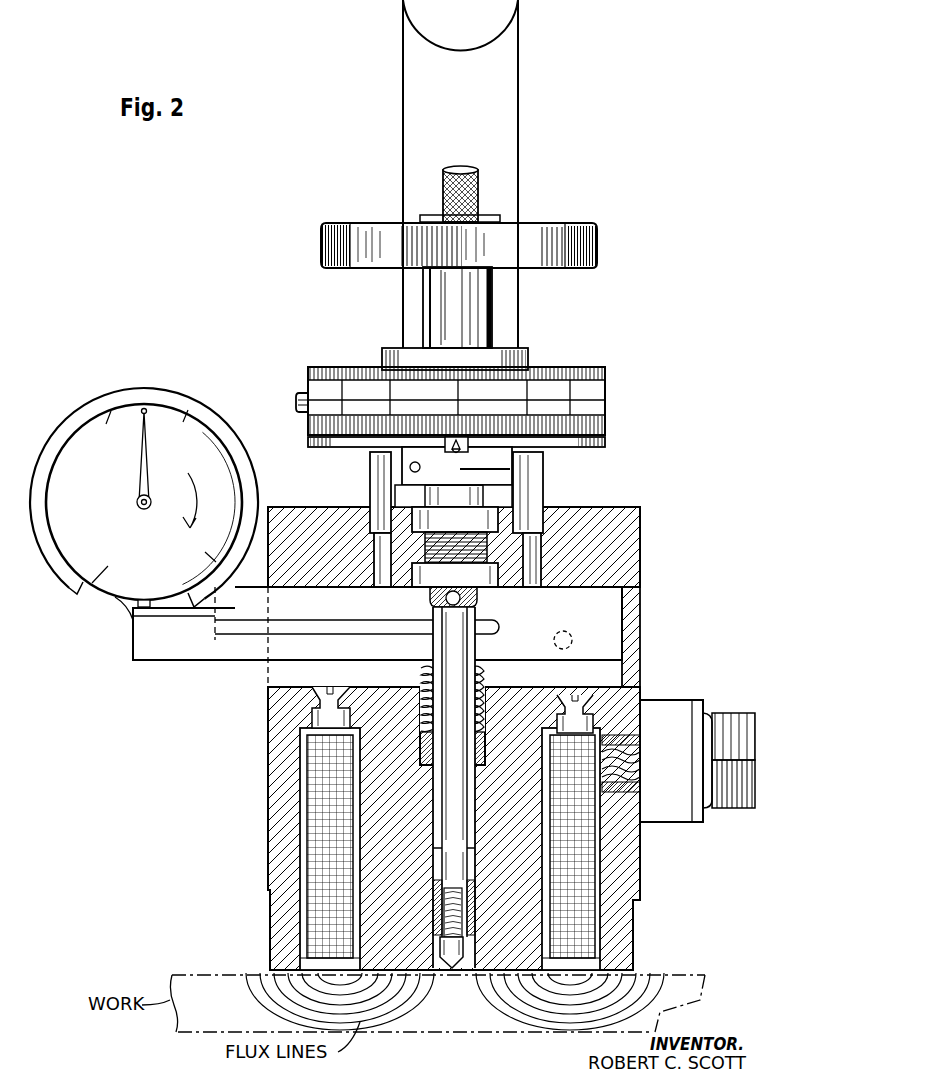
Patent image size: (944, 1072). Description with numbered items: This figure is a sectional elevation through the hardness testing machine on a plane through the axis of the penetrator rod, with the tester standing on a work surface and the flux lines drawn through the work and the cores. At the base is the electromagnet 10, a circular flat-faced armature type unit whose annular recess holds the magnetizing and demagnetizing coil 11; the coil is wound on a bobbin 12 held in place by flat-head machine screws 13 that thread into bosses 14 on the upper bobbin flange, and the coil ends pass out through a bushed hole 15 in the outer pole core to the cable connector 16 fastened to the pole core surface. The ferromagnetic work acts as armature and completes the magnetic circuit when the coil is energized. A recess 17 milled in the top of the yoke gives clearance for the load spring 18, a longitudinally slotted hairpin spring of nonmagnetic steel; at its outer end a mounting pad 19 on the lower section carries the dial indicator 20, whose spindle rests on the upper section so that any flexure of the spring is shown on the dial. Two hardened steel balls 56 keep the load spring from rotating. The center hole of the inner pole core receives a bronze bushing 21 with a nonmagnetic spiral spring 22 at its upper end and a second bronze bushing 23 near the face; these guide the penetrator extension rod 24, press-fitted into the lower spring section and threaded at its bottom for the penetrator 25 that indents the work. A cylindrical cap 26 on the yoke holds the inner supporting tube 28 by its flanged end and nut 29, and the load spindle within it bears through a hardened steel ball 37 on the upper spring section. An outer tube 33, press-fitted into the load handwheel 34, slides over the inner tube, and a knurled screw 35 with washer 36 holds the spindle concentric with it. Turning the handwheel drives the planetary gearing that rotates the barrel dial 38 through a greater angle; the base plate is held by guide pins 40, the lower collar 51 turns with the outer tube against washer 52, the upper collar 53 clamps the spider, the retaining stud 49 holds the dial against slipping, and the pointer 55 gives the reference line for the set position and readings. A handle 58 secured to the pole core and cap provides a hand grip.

The handle 58 is at (473, 25).
The knurled screw 35 is at (478, 178).
The washer 36 is at (485, 220).
The load handwheel 34 is at (600, 238).
The outer tube 33 is at (500, 300).
The upper collar 53 is at (528, 347).
The barrel dial 38 is at (605, 394).
The retaining stud 49 is at (296, 400).
The pointer 55 is at (452, 456).
The washer 52 is at (512, 470).
The guide pins 40 is at (543, 500).
The lower collar 51 is at (410, 495).
The inner supporting tube 28 is at (497, 495).
The nut 29 is at (466, 529).
The cylindrical cap 26 is at (640, 522).
The hardened steel ball 37 is at (477, 598).
The load spring 18 is at (541, 636).
The hardened steel balls 56 is at (570, 634).
The dial indicator 20 is at (70, 584).
The mounting pad 19 is at (118, 604).
The recess 17 is at (282, 676).
The flat-head machine screws 13 is at (340, 692).
The nonmagnetic spiral spring 22 is at (420, 686).
The bronze bushing 21 is at (497, 740).
The bosses 14 is at (320, 722).
The bushed hole 15 is at (622, 778).
The cable connector 16 is at (735, 812).
The penetrator extension rod 24 is at (467, 821).
The electromagnet 10 is at (252, 857).
The second bronze bushing 23 is at (444, 893).
The magnetizing and demagnetizing coil 11 is at (325, 905).
The bobbin 12 is at (600, 958).
The penetrator 25 is at (440, 945).